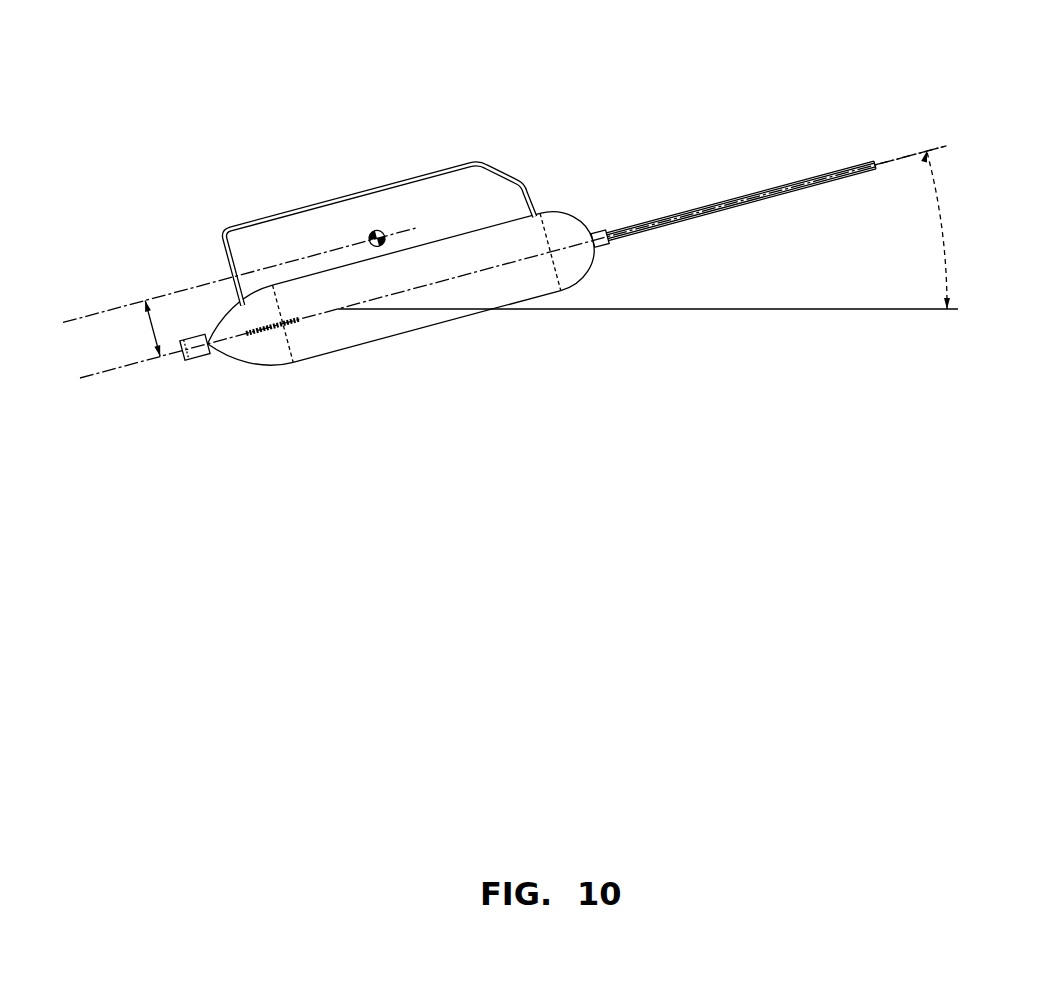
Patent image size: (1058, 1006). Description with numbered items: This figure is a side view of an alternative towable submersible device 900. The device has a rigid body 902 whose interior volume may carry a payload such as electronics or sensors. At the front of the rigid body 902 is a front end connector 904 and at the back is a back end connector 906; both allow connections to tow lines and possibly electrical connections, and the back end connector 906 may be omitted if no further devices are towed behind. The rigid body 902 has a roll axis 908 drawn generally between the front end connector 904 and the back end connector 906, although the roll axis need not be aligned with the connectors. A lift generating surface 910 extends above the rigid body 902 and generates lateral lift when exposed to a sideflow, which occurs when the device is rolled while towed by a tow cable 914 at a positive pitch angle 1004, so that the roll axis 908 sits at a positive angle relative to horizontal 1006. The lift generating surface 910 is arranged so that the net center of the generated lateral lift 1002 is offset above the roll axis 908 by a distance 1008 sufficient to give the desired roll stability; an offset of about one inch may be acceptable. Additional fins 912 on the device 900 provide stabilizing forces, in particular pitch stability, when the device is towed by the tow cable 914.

The towable submersible device 900 is at (495, 131).
The rigid body 902 is at (417, 320).
The front end connector 904 is at (596, 252).
The back end connector 906 is at (195, 357).
The roll axis 908 is at (903, 157).
The lift generating surface 910 is at (413, 178).
The fins 912 is at (265, 337).
The tow cable 914 is at (750, 194).
The net center of the generated lateral lift 1002 is at (377, 230).
The positive pitch angle 1004 is at (935, 203).
The horizontal 1006 is at (728, 310).
The distance 1008 is at (153, 330).